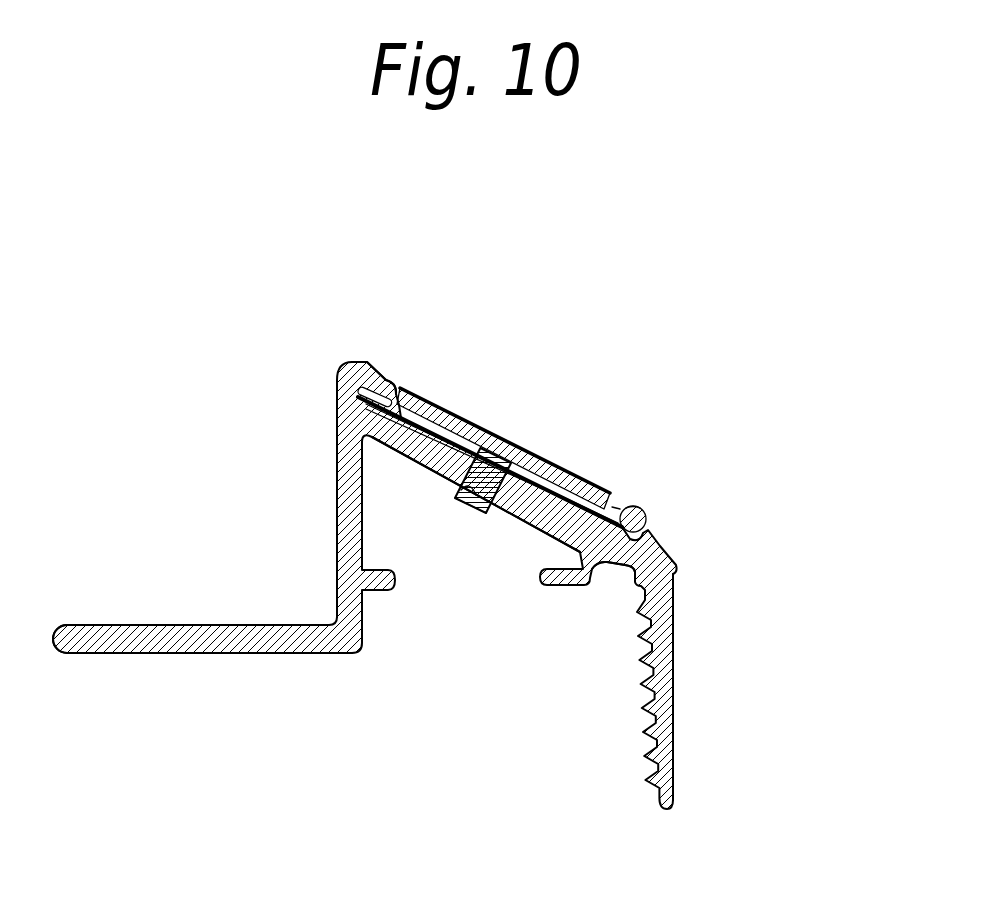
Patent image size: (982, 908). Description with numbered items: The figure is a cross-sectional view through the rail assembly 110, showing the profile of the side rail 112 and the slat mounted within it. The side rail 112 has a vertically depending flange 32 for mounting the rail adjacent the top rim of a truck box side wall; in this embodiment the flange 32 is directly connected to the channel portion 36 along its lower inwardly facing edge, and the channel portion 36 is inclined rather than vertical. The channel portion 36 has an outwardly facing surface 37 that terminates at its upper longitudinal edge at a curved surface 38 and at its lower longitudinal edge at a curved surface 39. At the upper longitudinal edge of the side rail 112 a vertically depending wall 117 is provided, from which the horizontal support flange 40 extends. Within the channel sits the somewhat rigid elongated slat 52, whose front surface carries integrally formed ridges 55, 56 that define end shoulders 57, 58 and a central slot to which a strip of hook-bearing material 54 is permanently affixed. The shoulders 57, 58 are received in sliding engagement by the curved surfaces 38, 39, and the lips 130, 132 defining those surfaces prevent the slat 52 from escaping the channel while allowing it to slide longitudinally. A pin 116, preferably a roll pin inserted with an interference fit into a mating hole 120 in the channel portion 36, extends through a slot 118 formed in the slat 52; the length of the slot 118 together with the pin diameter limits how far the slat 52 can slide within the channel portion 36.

The rail assembly 110 is at (728, 358).
The side rail 112 is at (686, 620).
The vertically depending flange 32 is at (659, 666).
The channel portion 36 is at (531, 533).
The outwardly facing surface 37 is at (497, 512).
The curved surface 38 is at (366, 388).
The curved surface 39 is at (644, 516).
The horizontal support flange 40 is at (150, 654).
The elongated slat 52 is at (461, 395).
The hook-bearing material 54 is at (410, 388).
The ridge 55 is at (391, 384).
The ridge 56 is at (618, 507).
The end shoulder 57 is at (358, 392).
The end shoulder 58 is at (653, 533).
The pin 116 is at (527, 462).
The vertically depending wall 117 is at (338, 505).
The slot 118 is at (492, 440).
The mating hole 120 is at (478, 508).
The lip 130 is at (380, 393).
The lip 132 is at (636, 513).